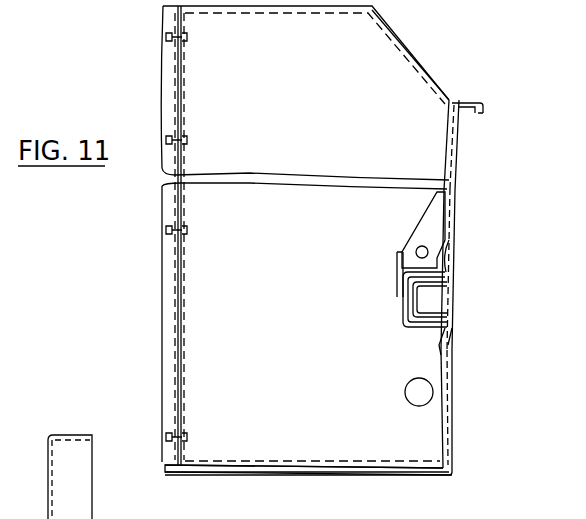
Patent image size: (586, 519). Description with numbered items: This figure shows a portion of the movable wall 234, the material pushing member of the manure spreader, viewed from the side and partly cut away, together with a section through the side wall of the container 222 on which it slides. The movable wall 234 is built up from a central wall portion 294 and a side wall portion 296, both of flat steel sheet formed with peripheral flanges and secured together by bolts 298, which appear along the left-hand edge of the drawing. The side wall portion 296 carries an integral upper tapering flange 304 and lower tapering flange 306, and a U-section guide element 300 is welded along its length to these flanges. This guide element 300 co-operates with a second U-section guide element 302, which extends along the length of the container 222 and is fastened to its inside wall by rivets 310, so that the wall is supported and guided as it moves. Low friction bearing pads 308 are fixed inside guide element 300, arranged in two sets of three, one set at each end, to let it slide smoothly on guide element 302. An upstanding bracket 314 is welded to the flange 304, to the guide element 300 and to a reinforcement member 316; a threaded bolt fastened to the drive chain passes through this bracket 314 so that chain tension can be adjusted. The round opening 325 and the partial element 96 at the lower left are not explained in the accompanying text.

The central wall portion 294 is at (163, 78).
The bolts 298 is at (178, 212).
The movable wall 234 is at (437, 78).
The upper tapering flange 304 is at (456, 150).
The guide element 302 is at (455, 305).
The lower tapering flange 306 is at (452, 392).
The container 222 is at (455, 450).
The side wall portion 296 is at (230, 466).
The upstanding bracket 314 is at (422, 216).
The reinforcement member 316 is at (400, 262).
The guide element 300 is at (425, 335).
The low friction bearing pads 308 is at (412, 330).
The rivets 310 is at (456, 252).
The hole 325 is at (407, 400).
The adjacent element 96 is at (48, 455).